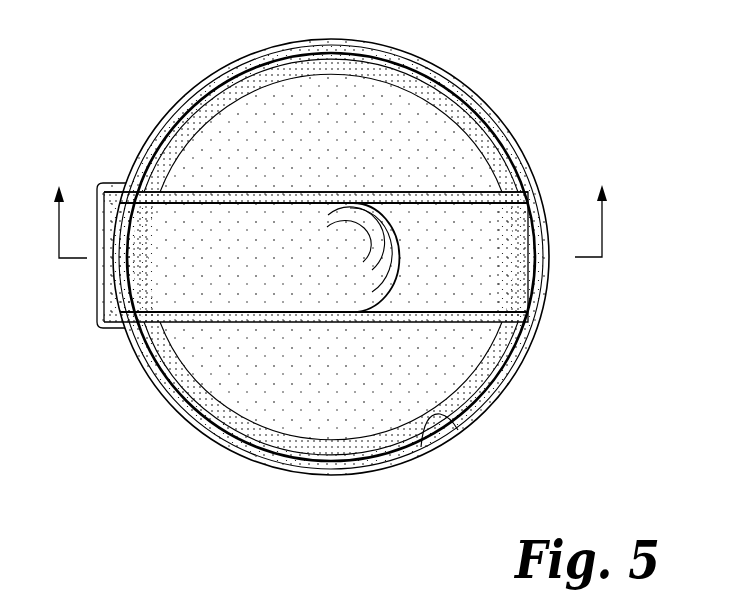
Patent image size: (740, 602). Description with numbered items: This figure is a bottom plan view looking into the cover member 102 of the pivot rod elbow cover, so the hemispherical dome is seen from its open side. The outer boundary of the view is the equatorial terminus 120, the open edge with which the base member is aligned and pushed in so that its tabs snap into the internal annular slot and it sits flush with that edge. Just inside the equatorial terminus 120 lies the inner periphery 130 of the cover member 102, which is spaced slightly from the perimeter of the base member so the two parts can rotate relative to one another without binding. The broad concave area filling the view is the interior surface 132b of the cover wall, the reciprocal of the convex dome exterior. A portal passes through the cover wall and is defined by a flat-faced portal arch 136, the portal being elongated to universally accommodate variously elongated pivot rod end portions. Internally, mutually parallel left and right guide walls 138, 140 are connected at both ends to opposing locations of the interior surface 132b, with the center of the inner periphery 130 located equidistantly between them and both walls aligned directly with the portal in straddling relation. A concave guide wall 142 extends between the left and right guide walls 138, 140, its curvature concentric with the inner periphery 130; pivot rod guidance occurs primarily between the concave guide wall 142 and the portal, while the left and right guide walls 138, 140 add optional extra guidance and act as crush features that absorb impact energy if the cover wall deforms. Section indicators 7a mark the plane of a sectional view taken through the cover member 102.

The cover member 102 is at (512, 118).
The equatorial terminus 120 is at (535, 335).
The inner periphery 130 is at (445, 417).
The interior surface 132b is at (405, 122).
The portal arch 136 is at (93, 287).
The left guide wall 138 is at (215, 190).
The right guide wall 140 is at (283, 322).
The concave guide wall 142 is at (368, 293).
The section line 7a is at (326, 204).